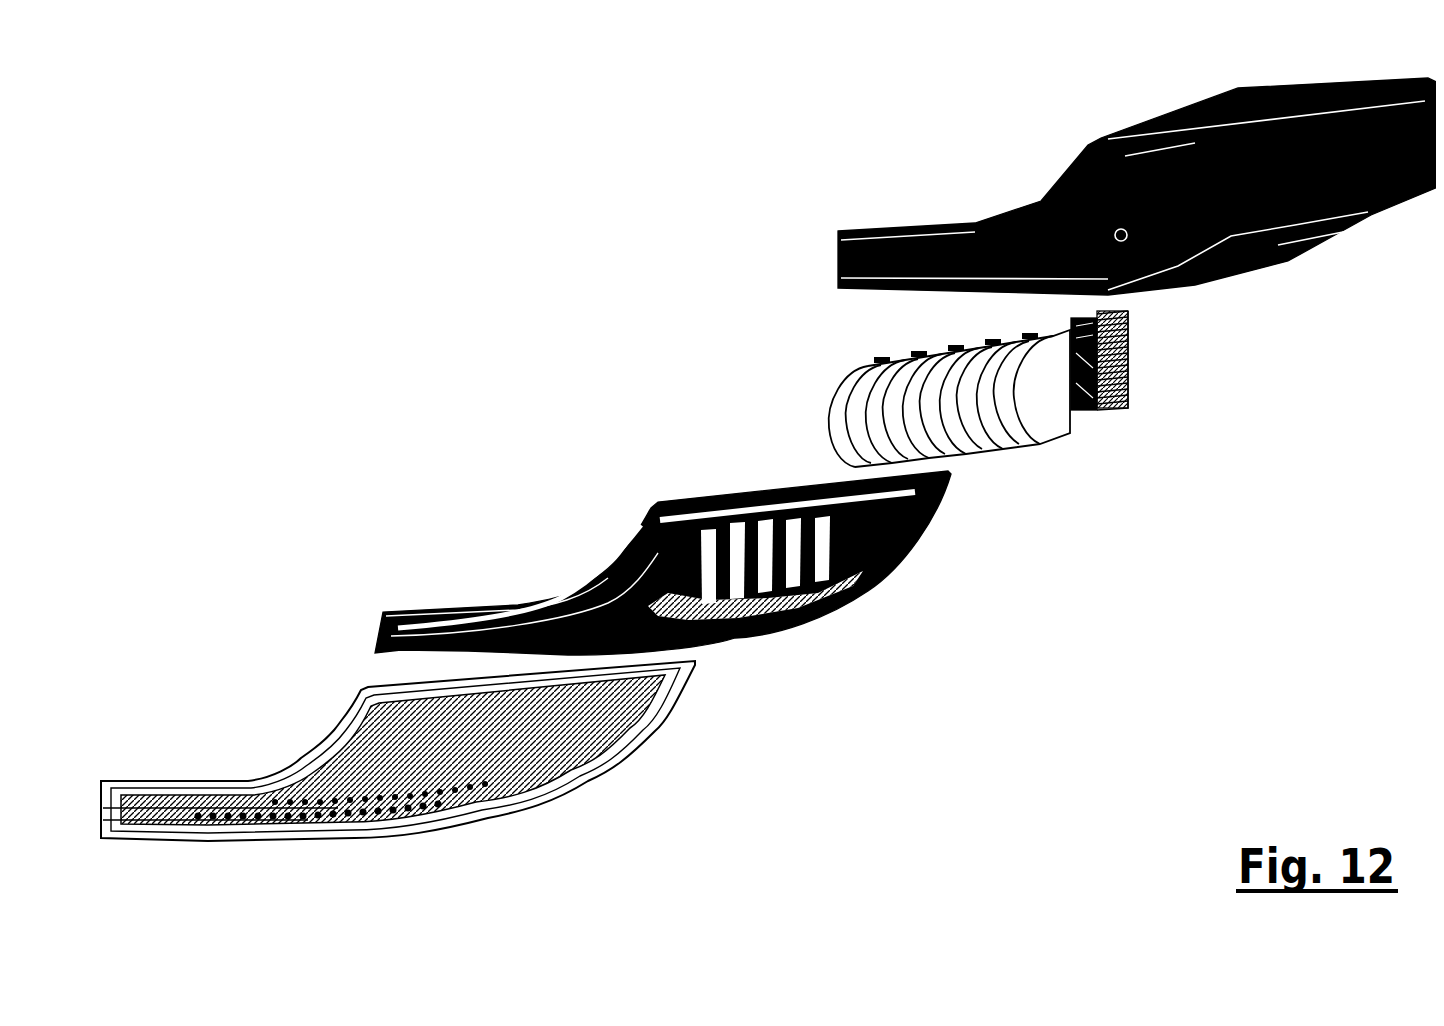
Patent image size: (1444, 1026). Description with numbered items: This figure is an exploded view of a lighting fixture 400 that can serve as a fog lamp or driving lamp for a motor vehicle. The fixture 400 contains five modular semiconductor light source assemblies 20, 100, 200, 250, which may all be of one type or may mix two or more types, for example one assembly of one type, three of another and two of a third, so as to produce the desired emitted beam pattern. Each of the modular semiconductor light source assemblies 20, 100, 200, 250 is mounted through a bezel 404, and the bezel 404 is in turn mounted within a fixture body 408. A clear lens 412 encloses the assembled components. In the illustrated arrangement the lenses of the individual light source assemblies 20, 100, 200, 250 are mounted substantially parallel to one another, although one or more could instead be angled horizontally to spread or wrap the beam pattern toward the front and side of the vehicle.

The lighting fixture 400 is at (768, 476).
The bezel 404 is at (815, 608).
The fixture body 408 is at (1233, 106).
The clear lens 412 is at (228, 772).
The modular semiconductor light source assembly 20 is at (1115, 433).
The modular semiconductor light source assembly 100 is at (1115, 433).
The modular semiconductor light source assembly 200 is at (1115, 433).
The modular semiconductor light source assembly 250 is at (1007, 460).